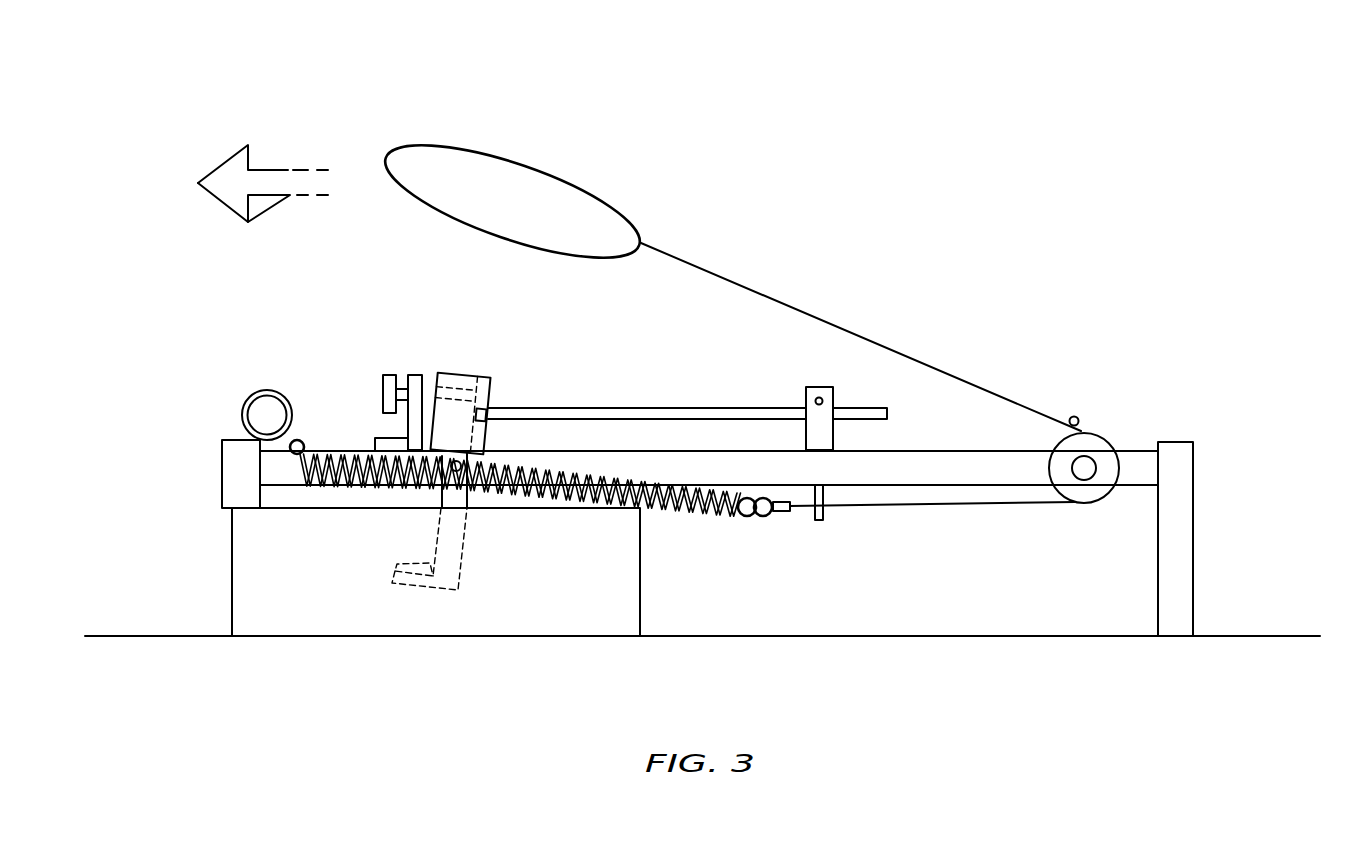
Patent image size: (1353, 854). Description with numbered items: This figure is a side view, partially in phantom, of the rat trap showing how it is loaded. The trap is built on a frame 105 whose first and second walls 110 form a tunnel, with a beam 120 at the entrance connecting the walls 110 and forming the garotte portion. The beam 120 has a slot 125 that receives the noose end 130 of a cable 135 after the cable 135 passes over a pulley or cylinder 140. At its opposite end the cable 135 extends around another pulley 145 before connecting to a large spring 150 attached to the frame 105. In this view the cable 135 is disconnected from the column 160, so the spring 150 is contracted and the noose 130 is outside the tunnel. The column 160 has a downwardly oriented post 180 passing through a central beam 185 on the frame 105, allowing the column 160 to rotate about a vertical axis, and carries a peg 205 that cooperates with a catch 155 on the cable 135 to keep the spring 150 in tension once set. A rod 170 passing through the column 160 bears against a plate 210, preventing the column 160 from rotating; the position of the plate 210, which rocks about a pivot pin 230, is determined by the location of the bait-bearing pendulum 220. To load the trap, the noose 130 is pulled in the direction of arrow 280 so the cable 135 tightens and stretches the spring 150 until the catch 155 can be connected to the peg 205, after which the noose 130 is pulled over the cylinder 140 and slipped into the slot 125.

The frame 105 is at (1185, 490).
The first and second walls 110 is at (578, 600).
The beam 120 is at (283, 587).
The slot 125 is at (228, 440).
The noose end 130 is at (492, 153).
The cable 135 is at (932, 503).
The pulley or cylinder 140 is at (266, 390).
The pulley 145 is at (1080, 492).
The spring 150 is at (687, 512).
The catch 155 is at (1077, 416).
The column 160 is at (806, 435).
The rod 170 is at (652, 408).
The post 180 is at (819, 513).
The central beam 185 is at (1137, 450).
The peg 205 is at (822, 398).
The plate 210 is at (450, 373).
The pendulum 220 is at (458, 582).
The pivot pin 230 is at (460, 464).
The arrow 280 is at (260, 170).